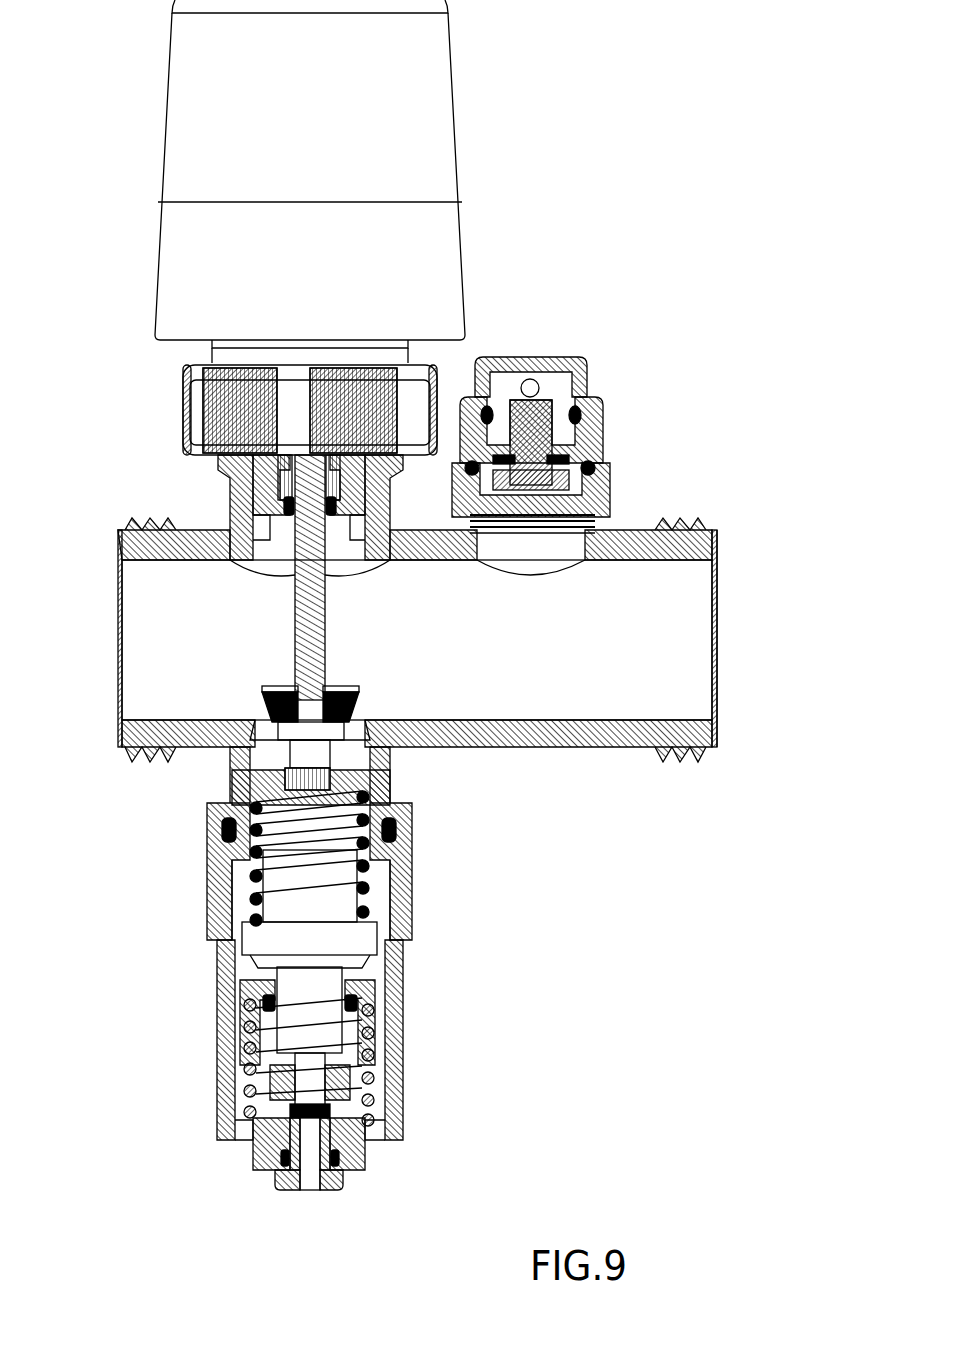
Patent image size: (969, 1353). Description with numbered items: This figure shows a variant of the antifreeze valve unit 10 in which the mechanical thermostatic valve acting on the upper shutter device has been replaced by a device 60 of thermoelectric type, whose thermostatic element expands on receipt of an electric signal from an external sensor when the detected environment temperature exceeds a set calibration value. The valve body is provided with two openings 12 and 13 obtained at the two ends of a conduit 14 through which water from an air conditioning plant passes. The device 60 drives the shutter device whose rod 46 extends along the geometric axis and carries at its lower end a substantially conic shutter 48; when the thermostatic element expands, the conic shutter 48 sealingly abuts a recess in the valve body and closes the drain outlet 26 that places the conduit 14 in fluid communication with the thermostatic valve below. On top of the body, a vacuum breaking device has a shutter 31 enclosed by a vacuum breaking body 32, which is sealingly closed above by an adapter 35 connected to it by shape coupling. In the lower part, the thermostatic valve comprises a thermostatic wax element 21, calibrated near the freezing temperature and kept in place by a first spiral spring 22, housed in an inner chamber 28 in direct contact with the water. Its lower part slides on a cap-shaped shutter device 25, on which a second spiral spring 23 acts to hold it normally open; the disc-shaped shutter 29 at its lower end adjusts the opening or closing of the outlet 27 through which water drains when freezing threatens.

The antifreeze valve unit 10 is at (638, 115).
The device of thermoelectric type 60 is at (243, 105).
The opening 12 is at (117, 642).
The opening 13 is at (717, 603).
The conduit 14 is at (638, 653).
The rod 46 is at (228, 512).
The conic shutter 48 is at (290, 745).
The adapter 35 is at (538, 356).
The shutter 31 is at (580, 398).
The vacuum breaking body 32 is at (605, 447).
The drain outlet 26 is at (415, 808).
The first spiral spring 22 is at (295, 840).
The thermostatic wax element 21 is at (307, 953).
The cap-shaped shutter device 25 is at (262, 1005).
The inner chamber 28 is at (385, 980).
The disc-shaped shutter 29 is at (263, 1094).
The second spiral spring 23 is at (370, 1093).
The outlet 27 is at (310, 1190).